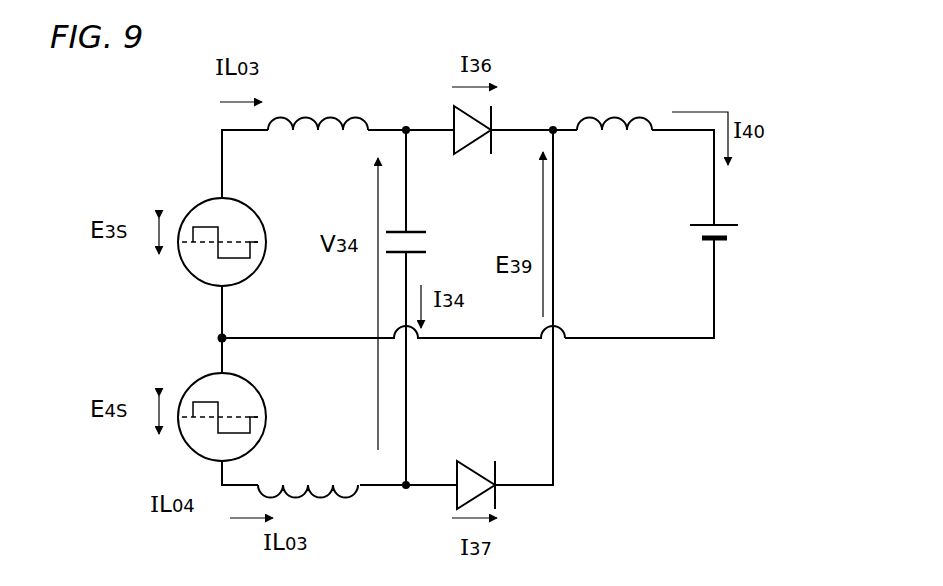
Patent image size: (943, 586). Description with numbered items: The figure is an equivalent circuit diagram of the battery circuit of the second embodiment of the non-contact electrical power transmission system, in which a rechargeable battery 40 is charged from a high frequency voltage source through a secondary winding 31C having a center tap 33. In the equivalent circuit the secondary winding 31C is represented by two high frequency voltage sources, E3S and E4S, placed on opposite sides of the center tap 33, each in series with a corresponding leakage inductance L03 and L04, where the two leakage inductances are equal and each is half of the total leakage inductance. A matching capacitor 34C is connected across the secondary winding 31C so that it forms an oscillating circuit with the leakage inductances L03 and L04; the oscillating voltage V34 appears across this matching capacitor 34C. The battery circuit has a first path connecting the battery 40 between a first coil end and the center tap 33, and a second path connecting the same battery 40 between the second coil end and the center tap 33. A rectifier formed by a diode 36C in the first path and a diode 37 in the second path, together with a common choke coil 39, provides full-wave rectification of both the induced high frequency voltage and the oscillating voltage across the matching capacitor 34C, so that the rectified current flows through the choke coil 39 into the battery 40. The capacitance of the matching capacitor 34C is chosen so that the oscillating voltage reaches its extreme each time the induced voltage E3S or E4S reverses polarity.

The secondary winding 31C is at (197, 200).
The center tap 33 is at (207, 343).
The matching capacitor 34C is at (427, 242).
The diode 36C is at (445, 118).
The diode 37 is at (472, 462).
The choke coil 39 is at (605, 93).
The battery 40 is at (743, 230).
The leakage inductance L03 is at (322, 138).
The leakage inductance L04 is at (296, 488).